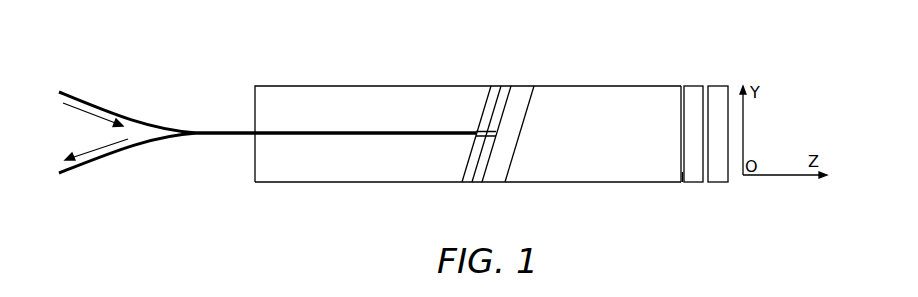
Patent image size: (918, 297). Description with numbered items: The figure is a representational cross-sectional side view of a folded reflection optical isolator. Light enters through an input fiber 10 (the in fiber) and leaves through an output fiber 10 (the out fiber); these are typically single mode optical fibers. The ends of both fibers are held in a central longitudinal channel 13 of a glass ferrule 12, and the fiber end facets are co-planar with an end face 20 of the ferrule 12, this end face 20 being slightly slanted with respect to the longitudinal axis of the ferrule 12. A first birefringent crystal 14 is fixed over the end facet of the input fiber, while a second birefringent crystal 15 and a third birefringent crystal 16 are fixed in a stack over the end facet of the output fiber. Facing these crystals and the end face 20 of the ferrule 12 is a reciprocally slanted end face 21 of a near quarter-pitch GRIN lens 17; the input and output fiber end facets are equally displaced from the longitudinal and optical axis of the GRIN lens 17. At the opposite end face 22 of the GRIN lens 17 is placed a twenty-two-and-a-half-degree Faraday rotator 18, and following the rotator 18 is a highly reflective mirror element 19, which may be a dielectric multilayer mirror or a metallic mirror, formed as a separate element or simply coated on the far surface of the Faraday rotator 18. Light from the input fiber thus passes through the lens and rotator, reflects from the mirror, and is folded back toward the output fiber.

The optical fibers 10 is at (100, 105).
The glass ferrule 12 is at (333, 102).
The central longitudinal channel 13 is at (328, 136).
The first birefringent crystal 14 is at (502, 97).
The second birefringent crystal 15 is at (487, 172).
The third birefringent crystal 16 is at (468, 177).
The GRIN lens 17 is at (605, 108).
The Faraday rotator 18 is at (693, 87).
The mirror element 19 is at (727, 183).
The end face of the ferrule 20 is at (491, 100).
The slanted end face of the GRIN lens 21 is at (532, 95).
The opposite end face of the GRIN lens 22 is at (684, 182).